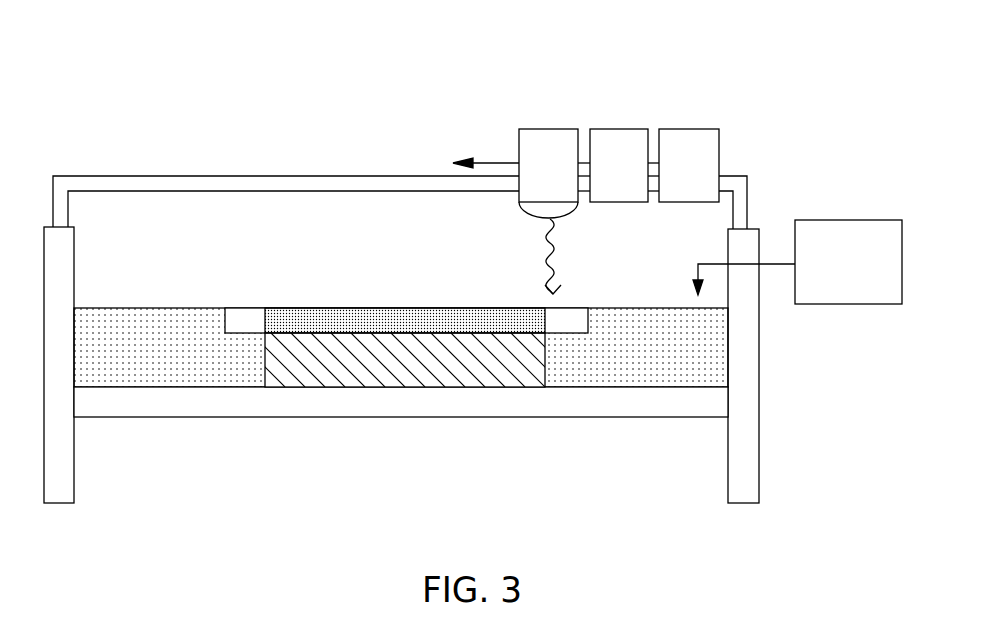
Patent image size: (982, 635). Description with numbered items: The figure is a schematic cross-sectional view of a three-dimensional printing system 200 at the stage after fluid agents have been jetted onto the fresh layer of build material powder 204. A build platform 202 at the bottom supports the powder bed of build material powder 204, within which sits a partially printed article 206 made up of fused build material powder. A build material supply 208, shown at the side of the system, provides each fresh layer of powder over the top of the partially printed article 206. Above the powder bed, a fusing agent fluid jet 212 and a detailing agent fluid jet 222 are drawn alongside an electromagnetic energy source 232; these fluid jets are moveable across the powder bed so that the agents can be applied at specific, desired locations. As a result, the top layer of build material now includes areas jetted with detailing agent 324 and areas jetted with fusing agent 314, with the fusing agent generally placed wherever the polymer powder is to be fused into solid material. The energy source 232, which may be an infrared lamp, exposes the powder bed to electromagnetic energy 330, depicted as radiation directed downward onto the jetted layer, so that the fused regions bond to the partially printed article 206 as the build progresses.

The 3D printing system 200 is at (130, 70).
The build platform 202 is at (566, 398).
The build material powder 204 is at (202, 362).
The partially printed article 206 is at (330, 377).
The build material supply 208 is at (828, 274).
The fusing agent fluid jet 212 is at (669, 177).
The detailing agent fluid jet 222 is at (599, 177).
The electromagnetic energy source 232 is at (528, 177).
The areas jetted with fusing agent 314 is at (313, 316).
The areas jetted with detailing agent 324 is at (248, 316).
The electromagnetic energy 330 is at (525, 240).